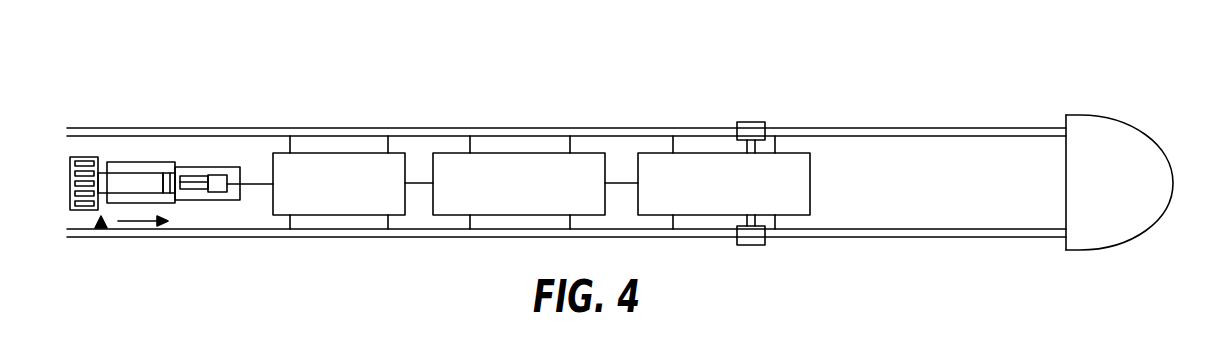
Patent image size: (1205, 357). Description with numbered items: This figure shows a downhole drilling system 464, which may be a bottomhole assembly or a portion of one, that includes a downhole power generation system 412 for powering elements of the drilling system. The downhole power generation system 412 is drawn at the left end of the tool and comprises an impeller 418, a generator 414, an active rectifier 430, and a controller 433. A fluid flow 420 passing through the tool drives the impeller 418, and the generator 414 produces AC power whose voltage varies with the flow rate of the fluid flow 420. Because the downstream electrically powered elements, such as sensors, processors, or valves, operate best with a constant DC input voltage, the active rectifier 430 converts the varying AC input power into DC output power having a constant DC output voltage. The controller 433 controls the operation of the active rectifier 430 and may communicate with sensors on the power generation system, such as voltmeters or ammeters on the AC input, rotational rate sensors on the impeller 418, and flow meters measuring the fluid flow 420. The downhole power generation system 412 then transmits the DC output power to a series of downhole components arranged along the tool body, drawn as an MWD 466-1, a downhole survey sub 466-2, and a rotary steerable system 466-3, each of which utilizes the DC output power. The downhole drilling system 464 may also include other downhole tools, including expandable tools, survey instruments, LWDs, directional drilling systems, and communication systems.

The downhole drilling system 464 is at (1048, 58).
The downhole power generation system 412 is at (184, 120).
The impeller 418 is at (82, 155).
The generator 414 is at (101, 228).
The fluid flow 420 is at (142, 225).
The active rectifier 430 is at (217, 173).
The controller 433 is at (223, 172).
The MWD 466-1 is at (353, 175).
The downhole survey sub 466-2 is at (514, 175).
The rotary steerable system 466-3 is at (687, 175).